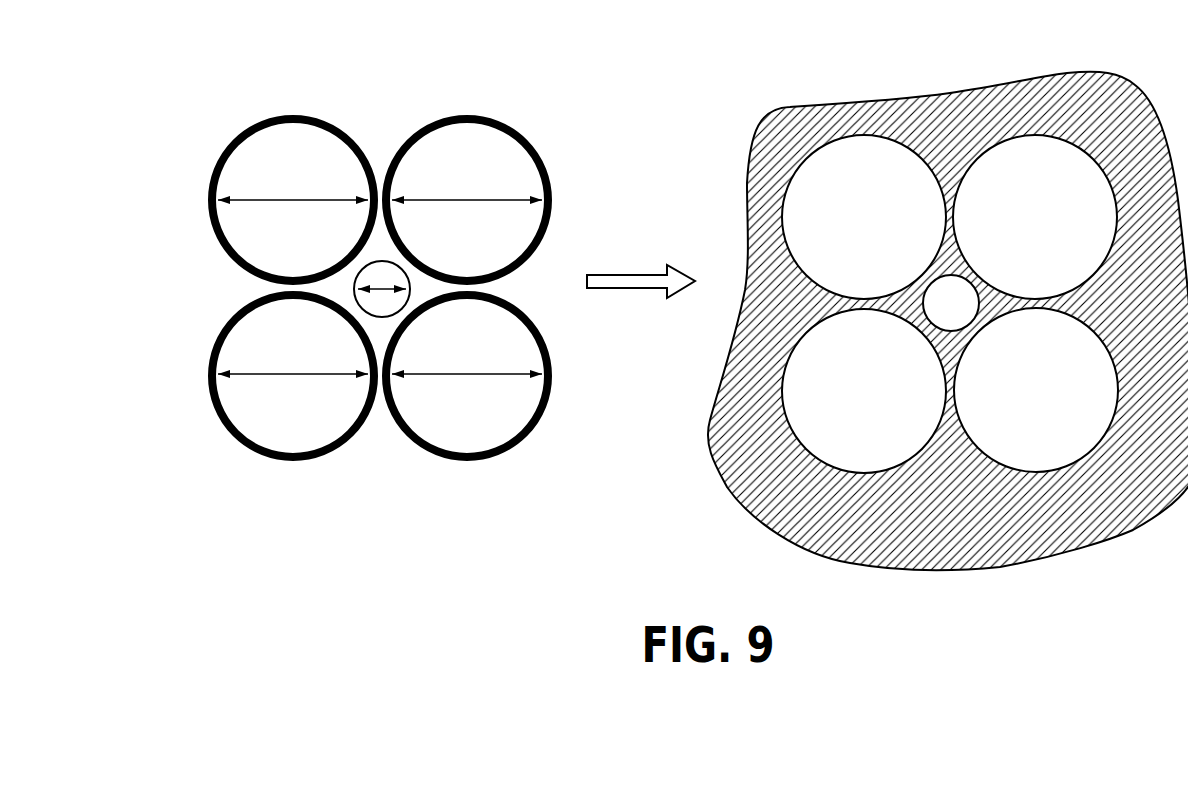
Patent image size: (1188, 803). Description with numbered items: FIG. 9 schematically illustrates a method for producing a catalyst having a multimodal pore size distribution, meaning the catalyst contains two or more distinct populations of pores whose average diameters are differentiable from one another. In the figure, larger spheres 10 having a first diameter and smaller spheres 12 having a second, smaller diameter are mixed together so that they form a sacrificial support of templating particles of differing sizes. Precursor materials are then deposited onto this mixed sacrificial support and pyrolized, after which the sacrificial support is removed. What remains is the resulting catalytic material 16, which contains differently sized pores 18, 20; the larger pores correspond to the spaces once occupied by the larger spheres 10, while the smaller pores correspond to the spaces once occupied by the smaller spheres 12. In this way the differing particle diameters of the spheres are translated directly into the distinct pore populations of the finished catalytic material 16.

The larger spheres 10 is at (503, 123).
The smaller spheres 12 is at (403, 277).
The catalytic material 16 is at (1125, 75).
The pores 18 is at (849, 228).
The pores 20 is at (961, 312).